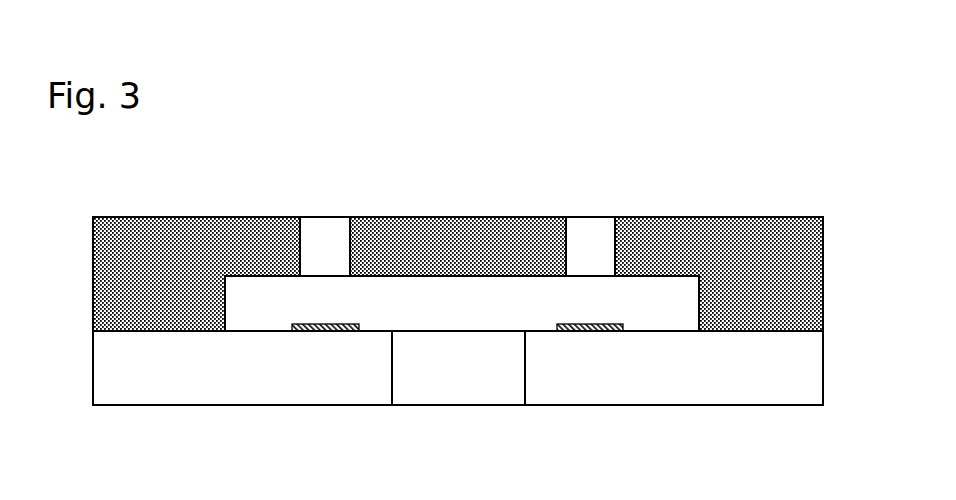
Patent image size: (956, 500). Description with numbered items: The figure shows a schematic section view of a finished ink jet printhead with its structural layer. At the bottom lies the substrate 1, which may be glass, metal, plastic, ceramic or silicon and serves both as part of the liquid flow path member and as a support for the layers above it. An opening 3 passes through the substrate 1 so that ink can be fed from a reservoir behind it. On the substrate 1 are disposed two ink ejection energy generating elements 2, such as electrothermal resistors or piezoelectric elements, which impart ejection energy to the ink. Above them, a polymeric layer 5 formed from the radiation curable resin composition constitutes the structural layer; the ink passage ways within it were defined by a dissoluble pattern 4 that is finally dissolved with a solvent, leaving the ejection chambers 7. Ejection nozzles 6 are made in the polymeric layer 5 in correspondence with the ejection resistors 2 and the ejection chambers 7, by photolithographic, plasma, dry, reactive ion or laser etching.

The substrate 1 is at (730, 373).
The ink ejection energy generating elements 2 is at (590, 333).
The opening 3 is at (458, 382).
The pattern 4 is at (656, 300).
The polymeric layer 5 is at (250, 243).
The ejection nozzles 6 is at (323, 233).
The ejection chambers 7 is at (308, 298).